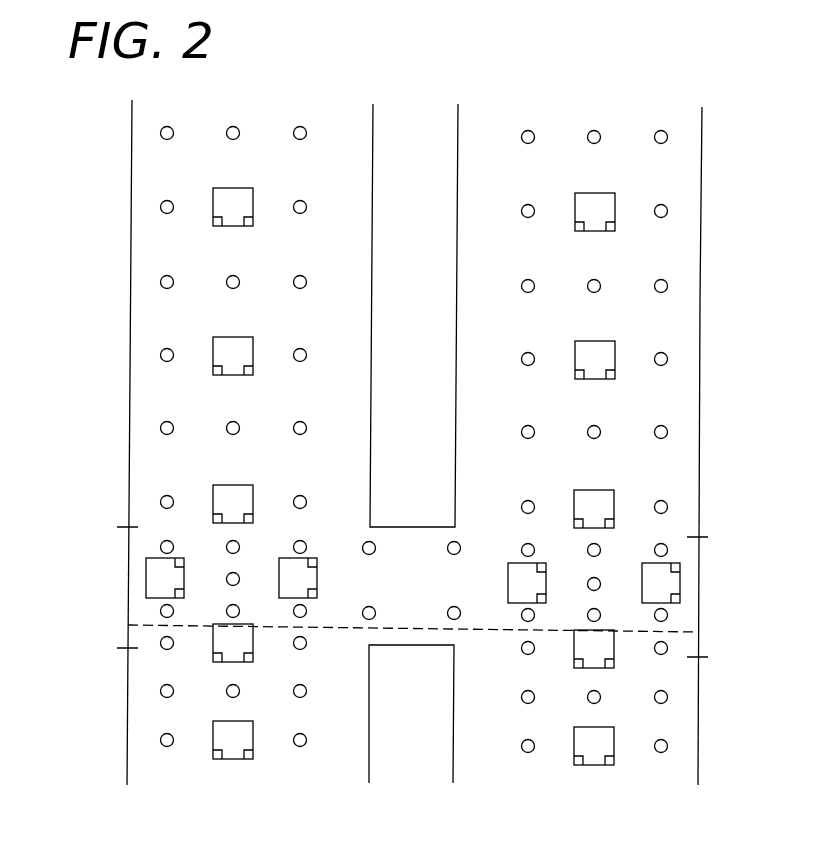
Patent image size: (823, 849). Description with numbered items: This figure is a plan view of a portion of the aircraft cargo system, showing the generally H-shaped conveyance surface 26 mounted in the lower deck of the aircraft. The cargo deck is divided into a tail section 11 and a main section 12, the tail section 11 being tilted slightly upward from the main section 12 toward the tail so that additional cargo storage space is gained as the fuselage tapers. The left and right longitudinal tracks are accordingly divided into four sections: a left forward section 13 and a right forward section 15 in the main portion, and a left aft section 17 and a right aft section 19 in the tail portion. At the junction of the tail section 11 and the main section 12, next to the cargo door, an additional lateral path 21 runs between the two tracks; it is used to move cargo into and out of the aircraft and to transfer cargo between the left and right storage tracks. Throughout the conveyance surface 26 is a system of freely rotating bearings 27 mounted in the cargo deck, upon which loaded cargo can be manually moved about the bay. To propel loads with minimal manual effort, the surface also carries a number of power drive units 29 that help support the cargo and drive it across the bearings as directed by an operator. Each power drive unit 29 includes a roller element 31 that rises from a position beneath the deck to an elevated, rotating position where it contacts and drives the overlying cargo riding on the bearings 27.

The tail section 11 is at (123, 702).
The main section 12 is at (121, 460).
The left forward section 13 is at (318, 133).
The right forward section 15 is at (665, 122).
The left aft section 17 is at (328, 758).
The right aft section 19 is at (658, 768).
The lateral path 21 is at (118, 577).
The conveyance surface 26 is at (416, 125).
The freely rotating bearings 27 is at (307, 208).
The power drive unit 29 is at (253, 497).
The roller element 31 is at (580, 231).